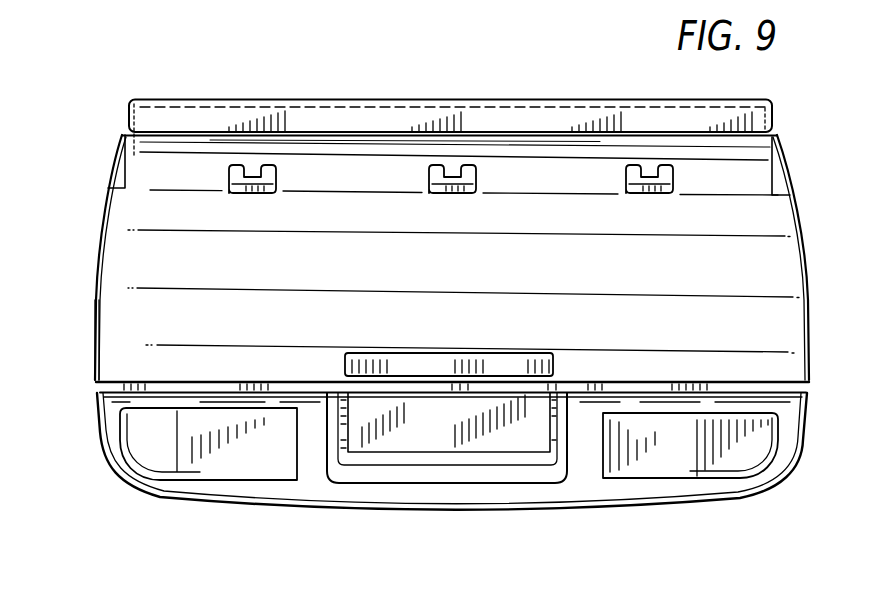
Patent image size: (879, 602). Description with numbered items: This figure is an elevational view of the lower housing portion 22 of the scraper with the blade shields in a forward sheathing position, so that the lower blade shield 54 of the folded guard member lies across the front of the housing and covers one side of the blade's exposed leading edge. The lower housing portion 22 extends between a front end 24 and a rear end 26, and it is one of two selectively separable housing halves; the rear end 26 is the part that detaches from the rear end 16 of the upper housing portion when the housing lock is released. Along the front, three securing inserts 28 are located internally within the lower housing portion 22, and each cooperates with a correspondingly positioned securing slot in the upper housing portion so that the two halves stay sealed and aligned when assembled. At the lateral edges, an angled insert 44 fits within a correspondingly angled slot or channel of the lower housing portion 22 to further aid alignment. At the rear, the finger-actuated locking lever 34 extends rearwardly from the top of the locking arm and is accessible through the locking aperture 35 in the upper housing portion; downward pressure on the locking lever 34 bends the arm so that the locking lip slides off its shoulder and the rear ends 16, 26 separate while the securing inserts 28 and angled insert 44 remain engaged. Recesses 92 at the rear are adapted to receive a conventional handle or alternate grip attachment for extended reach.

The rear end 16 is at (294, 500).
The lower housing portion 22 is at (160, 260).
The front end 24 is at (143, 156).
The rear end 26 is at (97, 363).
The securing insert 28 is at (448, 170).
The locking lever 34 is at (417, 433).
The locking aperture 35 is at (472, 473).
The angled insert 44 is at (787, 187).
The lower blade shield 54 is at (339, 120).
The recess 92 is at (190, 460).